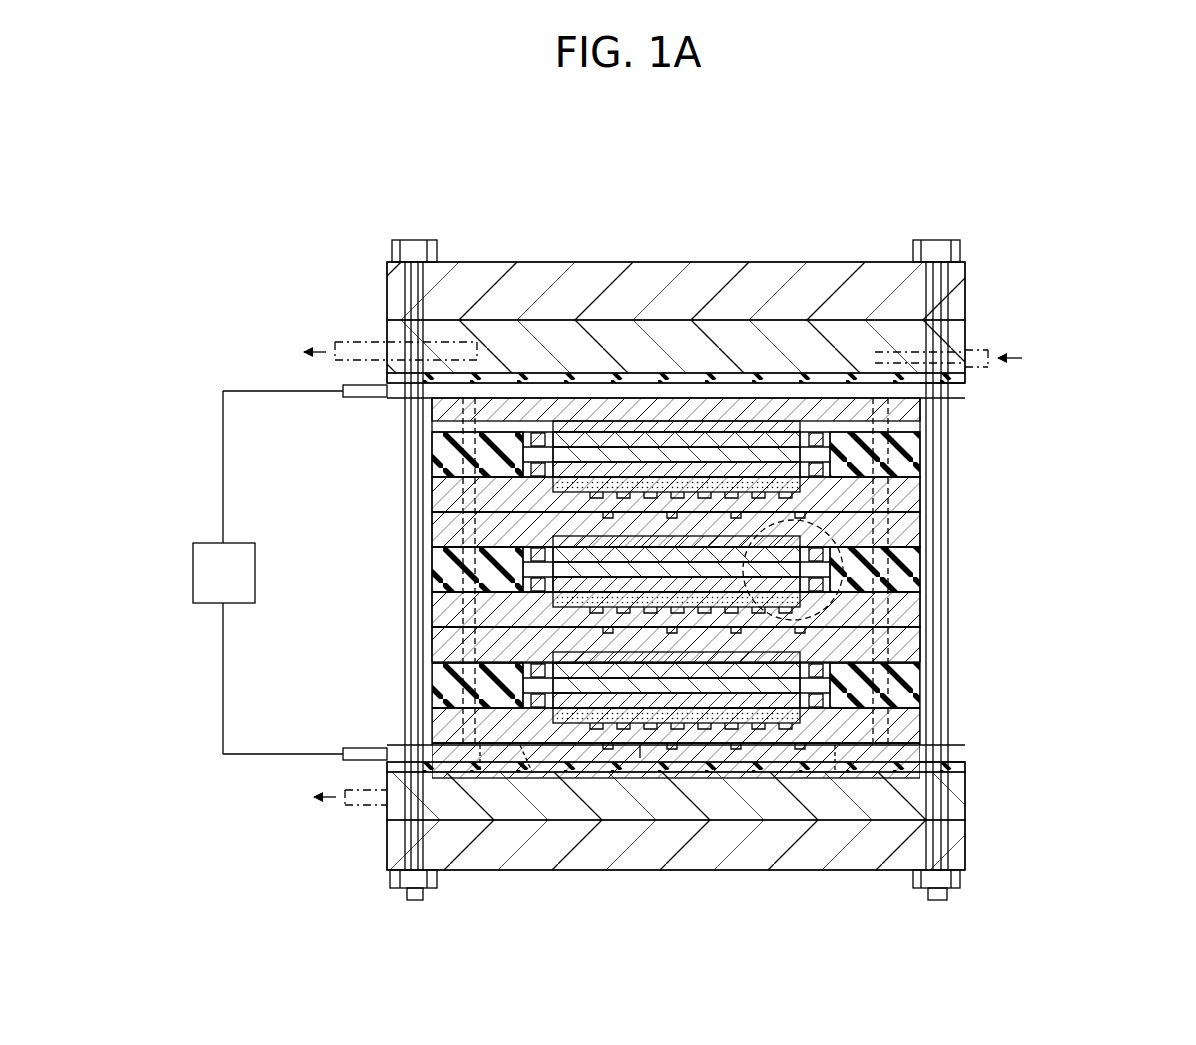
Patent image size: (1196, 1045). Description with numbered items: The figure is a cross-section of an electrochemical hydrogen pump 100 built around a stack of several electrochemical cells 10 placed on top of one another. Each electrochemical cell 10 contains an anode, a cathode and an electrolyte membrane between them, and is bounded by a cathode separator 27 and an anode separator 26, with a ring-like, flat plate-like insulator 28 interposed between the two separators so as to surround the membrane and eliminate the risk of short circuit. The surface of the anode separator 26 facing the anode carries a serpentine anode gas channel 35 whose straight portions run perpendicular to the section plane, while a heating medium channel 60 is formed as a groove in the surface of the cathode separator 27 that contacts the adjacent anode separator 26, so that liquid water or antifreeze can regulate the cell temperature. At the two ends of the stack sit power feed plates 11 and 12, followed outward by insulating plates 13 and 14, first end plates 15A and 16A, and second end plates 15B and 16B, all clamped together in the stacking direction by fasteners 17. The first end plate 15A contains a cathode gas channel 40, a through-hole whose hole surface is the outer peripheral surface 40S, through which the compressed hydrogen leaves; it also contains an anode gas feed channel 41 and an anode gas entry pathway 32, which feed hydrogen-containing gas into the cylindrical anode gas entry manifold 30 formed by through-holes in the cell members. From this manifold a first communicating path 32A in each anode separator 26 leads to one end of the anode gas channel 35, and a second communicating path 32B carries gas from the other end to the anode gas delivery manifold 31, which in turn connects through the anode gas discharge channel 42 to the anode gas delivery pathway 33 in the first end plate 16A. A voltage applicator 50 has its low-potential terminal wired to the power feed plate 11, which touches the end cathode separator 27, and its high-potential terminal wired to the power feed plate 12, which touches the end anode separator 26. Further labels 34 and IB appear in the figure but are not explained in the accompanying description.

The electrochemical hydrogen pump 100 is at (538, 134).
The electrochemical cell 10 is at (327, 512).
The power feed plate 11 is at (370, 398).
The power feed plate 12 is at (378, 748).
The insulating plate 13 is at (965, 383).
The insulating plate 14 is at (965, 762).
The first end plate 15A is at (762, 340).
The second end plate 15B is at (705, 290).
The first end plate 16A is at (770, 800).
The second end plate 16B is at (705, 822).
The fastener 17 is at (396, 236).
The anode separator 26 is at (446, 618).
The cathode separator 27 is at (446, 530).
The insulator 28 is at (446, 578).
The anode gas entry manifold 30 is at (890, 790).
The anode gas delivery manifold 31 is at (490, 792).
The anode gas entry pathway 32 is at (982, 356).
The first communicating path 32A is at (835, 790).
The second communicating path 32B is at (532, 772).
The anode gas delivery pathway 33 is at (366, 815).
The hydrogen outlet port 34 is at (370, 345).
The anode gas channel 35 is at (640, 758).
The cathode gas channel 40 is at (497, 345).
The outer peripheral surface of the cathode gas channel 40S is at (441, 345).
The anode gas feed channel 41 is at (895, 300).
The anode gas discharge channel 42 is at (443, 800).
The voltage applicator 50 is at (239, 589).
The heating medium channel 60 is at (770, 627).
The section view indicator IB is at (758, 510).